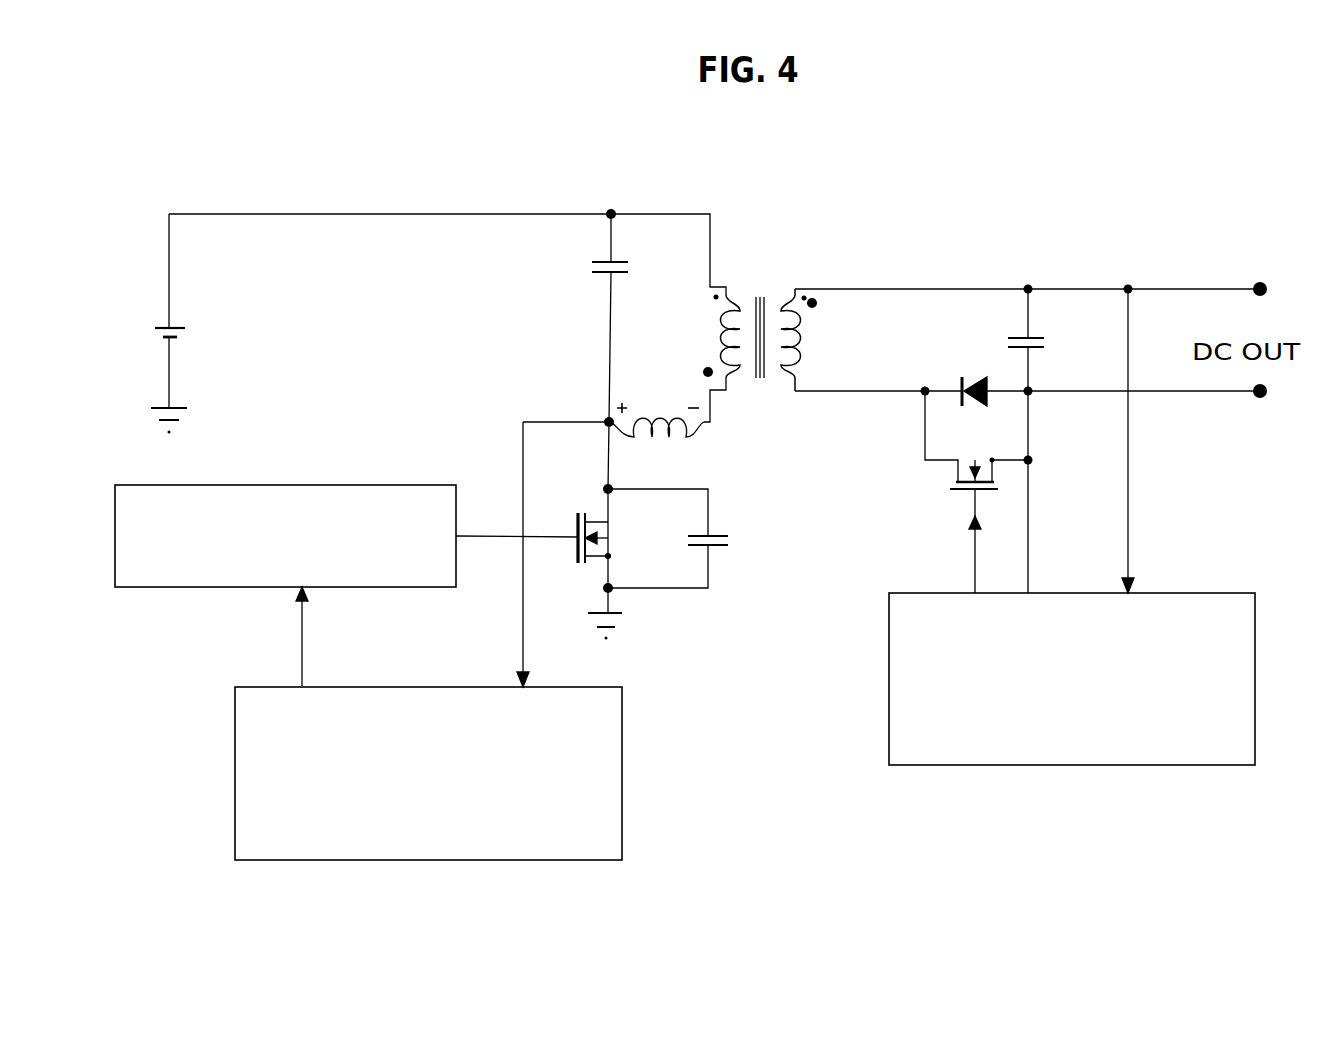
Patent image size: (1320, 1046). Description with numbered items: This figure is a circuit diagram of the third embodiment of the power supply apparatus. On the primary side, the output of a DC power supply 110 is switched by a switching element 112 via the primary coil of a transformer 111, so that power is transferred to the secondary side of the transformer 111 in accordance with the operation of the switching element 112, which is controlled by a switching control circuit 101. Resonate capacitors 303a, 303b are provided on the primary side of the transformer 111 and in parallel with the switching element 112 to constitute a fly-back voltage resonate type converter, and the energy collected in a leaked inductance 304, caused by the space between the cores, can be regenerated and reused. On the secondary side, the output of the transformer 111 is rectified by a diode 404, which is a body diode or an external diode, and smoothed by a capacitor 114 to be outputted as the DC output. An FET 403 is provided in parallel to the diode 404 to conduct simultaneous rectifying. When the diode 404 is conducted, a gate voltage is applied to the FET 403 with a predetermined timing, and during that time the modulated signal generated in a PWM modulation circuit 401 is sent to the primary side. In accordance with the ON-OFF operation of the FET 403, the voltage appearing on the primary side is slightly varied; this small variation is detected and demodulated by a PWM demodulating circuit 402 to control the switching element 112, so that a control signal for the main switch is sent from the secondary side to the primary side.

The DC power supply 110 is at (195, 331).
The resonate capacitor 303b is at (593, 267).
The leaked inductance 304 is at (654, 414).
The transformer 111 is at (760, 291).
The switching control circuit 101 is at (285, 536).
The switching element 112 is at (570, 520).
The resonate capacitor 303a is at (735, 541).
The PWM demodulating circuit 402 is at (428, 773).
The diode 404 is at (952, 389).
The capacitor 114 is at (1046, 342).
The FET 403 is at (965, 493).
The PWM modulation circuit 401 is at (1072, 679).